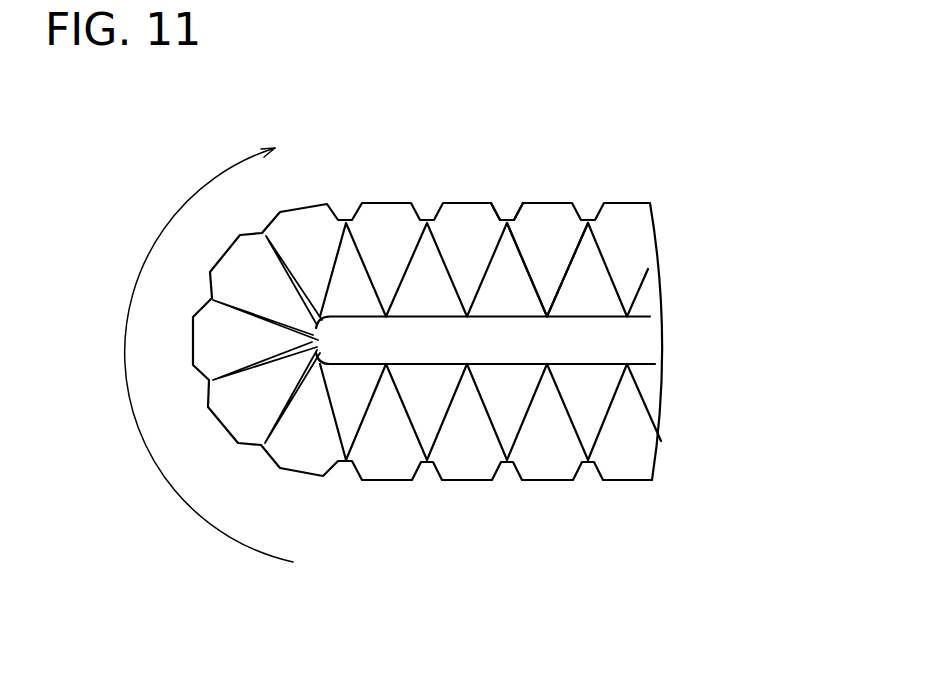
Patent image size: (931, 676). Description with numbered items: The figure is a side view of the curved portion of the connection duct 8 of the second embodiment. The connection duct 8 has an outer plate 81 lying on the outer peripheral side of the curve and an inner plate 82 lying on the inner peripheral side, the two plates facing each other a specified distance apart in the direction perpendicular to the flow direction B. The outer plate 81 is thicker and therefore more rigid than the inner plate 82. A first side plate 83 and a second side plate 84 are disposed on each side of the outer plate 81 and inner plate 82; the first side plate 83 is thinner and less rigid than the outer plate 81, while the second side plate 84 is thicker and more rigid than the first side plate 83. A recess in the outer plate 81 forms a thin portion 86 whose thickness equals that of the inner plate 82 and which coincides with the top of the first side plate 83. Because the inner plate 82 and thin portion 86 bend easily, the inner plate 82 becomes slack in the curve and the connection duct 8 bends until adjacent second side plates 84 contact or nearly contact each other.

The connection duct 8 is at (432, 190).
The outer plate 81 is at (620, 208).
The inner plate 82 is at (313, 347).
The first side plate 83 is at (588, 293).
The second side plate 84 is at (547, 240).
The thin portion 86 is at (510, 220).
The flow direction B is at (165, 227).